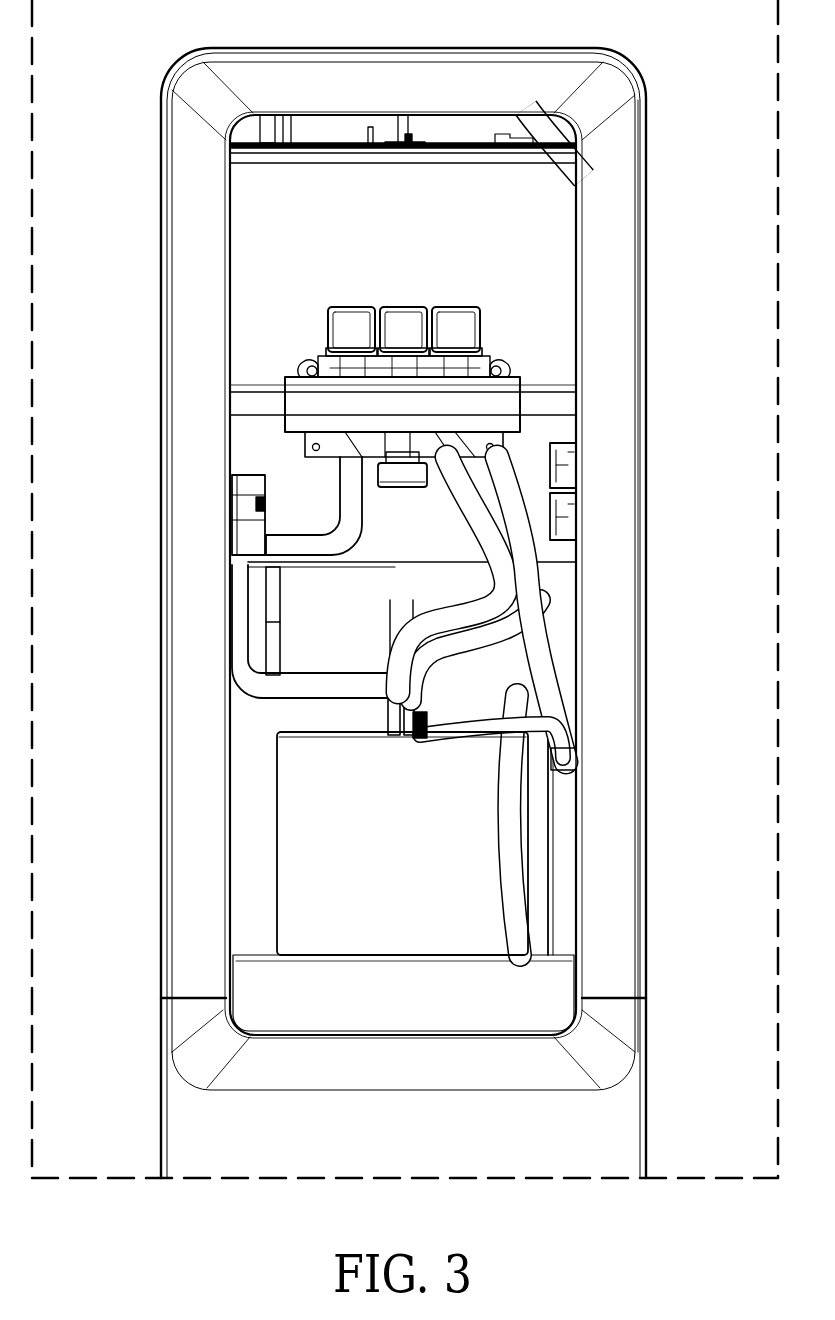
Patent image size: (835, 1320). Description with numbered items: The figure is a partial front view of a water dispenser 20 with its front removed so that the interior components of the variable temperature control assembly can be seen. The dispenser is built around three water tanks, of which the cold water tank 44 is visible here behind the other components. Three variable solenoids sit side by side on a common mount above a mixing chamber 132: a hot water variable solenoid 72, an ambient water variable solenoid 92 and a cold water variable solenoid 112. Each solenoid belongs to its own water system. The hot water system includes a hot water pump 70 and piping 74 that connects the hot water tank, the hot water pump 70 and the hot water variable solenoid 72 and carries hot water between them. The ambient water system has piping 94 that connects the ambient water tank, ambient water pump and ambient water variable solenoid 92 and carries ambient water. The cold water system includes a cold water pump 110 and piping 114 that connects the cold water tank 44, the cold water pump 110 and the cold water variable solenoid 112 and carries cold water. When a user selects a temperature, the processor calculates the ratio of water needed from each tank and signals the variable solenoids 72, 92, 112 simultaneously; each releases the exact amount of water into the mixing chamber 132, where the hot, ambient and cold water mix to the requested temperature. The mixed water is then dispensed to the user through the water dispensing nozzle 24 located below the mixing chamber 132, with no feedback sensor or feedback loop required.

The water dispenser 20 is at (664, 209).
The cold water tank 44 is at (540, 225).
The hot water variable solenoid 72 is at (348, 322).
The ambient water variable solenoid 92 is at (404, 318).
The cold water variable solenoid 112 is at (458, 320).
The mixing chamber 132 is at (497, 397).
The water dispensing nozzle 24 is at (402, 490).
The piping 74 is at (342, 491).
The hot water pump 70 is at (243, 478).
The piping 114 is at (556, 547).
The piping 94 is at (562, 666).
The cold water pump 110 is at (298, 855).